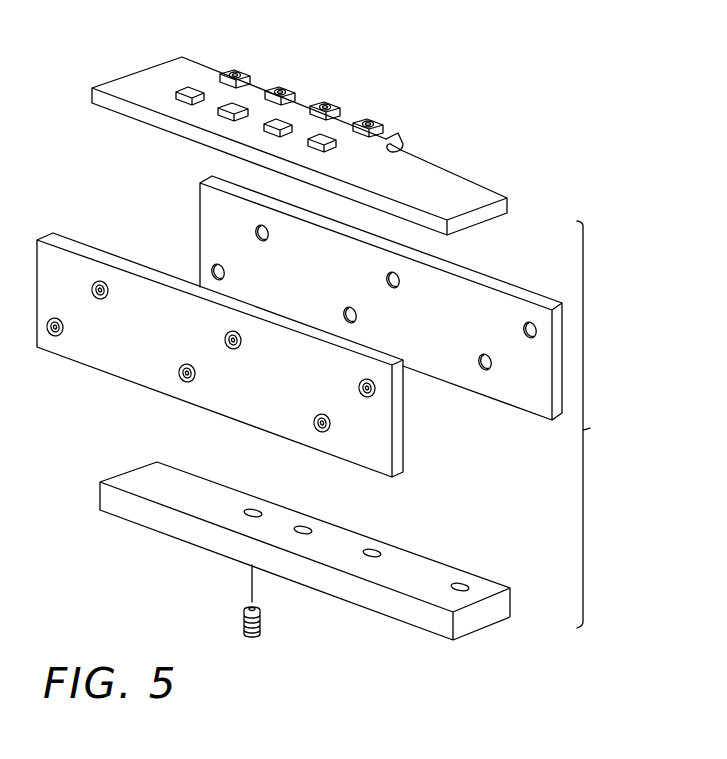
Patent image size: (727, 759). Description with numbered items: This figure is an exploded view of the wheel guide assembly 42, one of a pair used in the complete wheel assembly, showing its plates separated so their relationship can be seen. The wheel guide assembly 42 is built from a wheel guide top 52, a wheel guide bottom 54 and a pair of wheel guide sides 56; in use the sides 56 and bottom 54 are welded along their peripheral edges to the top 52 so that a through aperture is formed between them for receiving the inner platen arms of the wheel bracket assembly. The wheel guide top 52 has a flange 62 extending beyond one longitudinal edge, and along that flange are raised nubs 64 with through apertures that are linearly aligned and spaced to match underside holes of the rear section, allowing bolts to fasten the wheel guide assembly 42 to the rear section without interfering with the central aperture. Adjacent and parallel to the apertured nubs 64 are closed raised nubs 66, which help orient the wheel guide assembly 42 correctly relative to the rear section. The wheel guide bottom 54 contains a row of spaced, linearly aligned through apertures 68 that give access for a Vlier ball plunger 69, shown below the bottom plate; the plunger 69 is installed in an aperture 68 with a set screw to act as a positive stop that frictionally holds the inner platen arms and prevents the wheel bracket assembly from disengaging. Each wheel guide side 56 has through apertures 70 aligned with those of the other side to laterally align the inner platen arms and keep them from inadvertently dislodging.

The wheel guide assembly 42 is at (604, 424).
The wheel guide top 52 is at (447, 180).
The wheel guide bottom 54 is at (355, 603).
The wheel guide sides 56 is at (487, 279).
The flange 62 is at (395, 137).
The raised nubs 64 is at (278, 87).
The closed raised nubs 66 is at (180, 88).
The through apertures 68 is at (250, 511).
The Vlier ball plunger 69 is at (242, 623).
The through apertures 70 is at (180, 373).